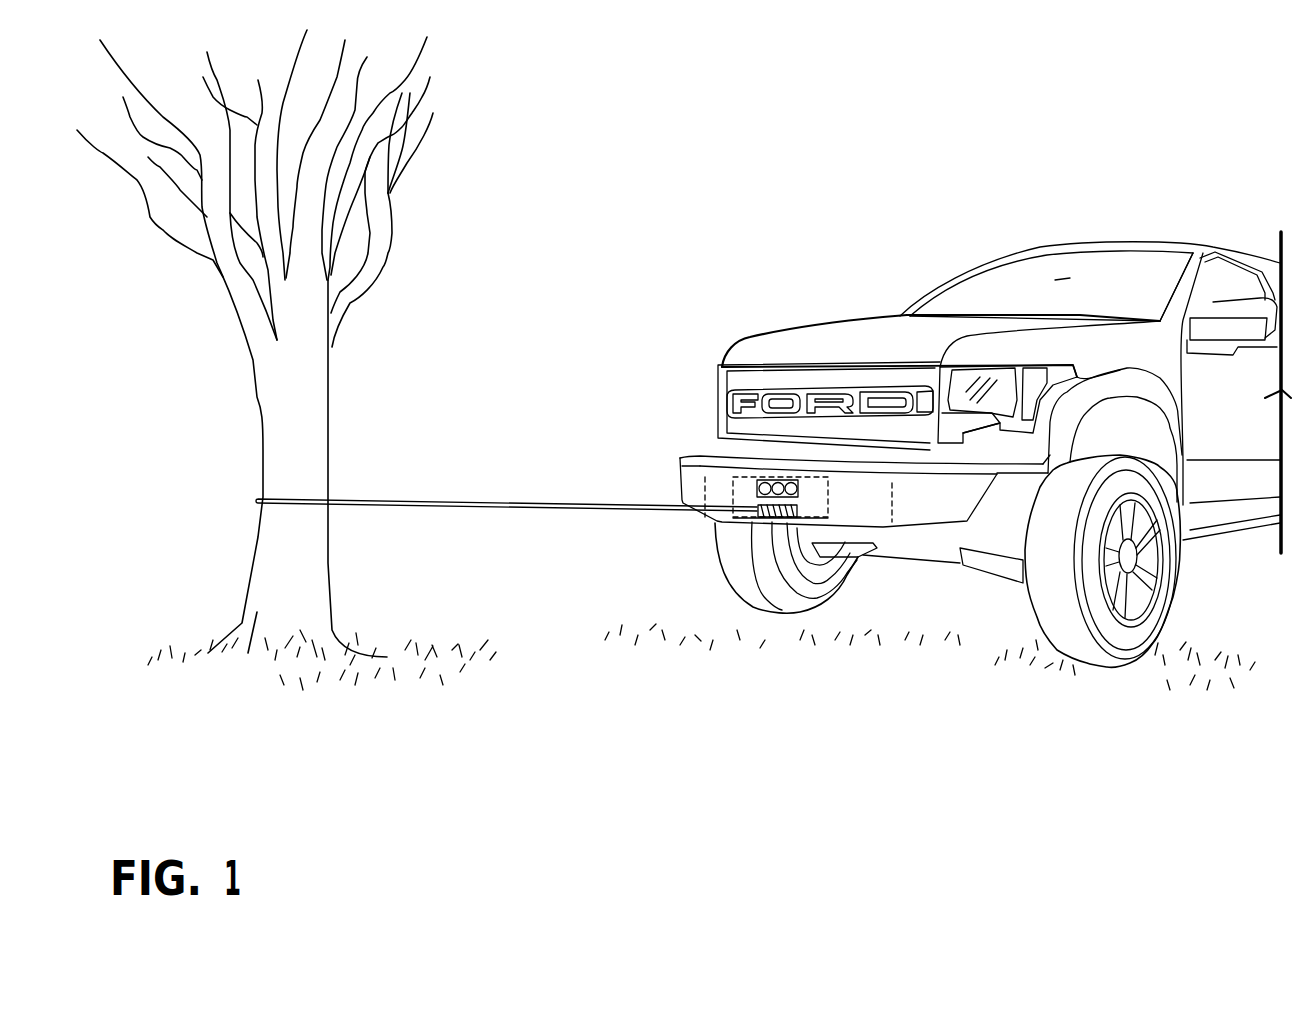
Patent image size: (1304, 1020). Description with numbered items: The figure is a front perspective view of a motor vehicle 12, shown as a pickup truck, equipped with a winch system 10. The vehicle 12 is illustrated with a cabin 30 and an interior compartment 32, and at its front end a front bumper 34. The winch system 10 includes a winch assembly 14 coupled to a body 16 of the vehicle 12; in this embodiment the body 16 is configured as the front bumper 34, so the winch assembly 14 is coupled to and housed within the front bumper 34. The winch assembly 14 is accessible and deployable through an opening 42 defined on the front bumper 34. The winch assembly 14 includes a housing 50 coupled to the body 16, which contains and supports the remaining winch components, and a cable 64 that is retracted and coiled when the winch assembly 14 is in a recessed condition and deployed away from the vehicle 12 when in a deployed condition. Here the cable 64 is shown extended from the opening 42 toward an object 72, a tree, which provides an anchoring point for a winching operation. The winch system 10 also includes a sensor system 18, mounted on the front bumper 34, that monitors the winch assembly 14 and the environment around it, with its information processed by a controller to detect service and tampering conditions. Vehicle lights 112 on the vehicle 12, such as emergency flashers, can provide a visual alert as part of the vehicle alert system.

The winch system 10 is at (776, 535).
The motor vehicle 12 is at (801, 328).
The winch assembly 14 is at (817, 535).
The body 16 is at (680, 455).
The sensor system 18 is at (763, 480).
The cabin 30 is at (1143, 275).
The interior compartment 32 is at (1062, 277).
The front bumper 34 is at (883, 525).
The opening 42 is at (760, 522).
The housing 50 is at (827, 477).
The cable 64 is at (513, 500).
The object 72 is at (327, 417).
The vehicle lights 112 is at (972, 370).